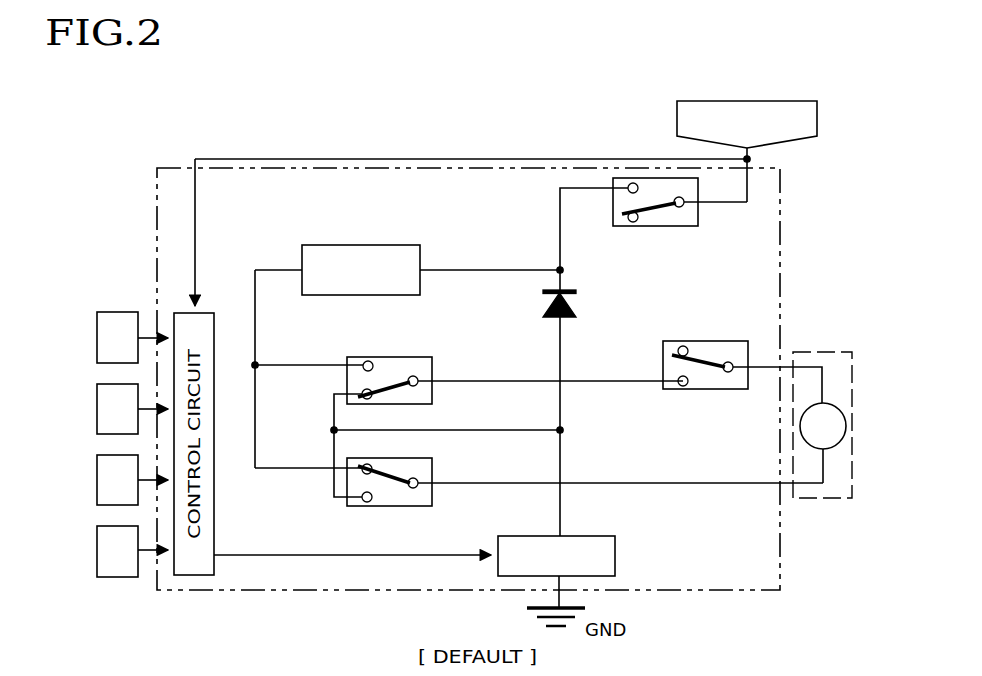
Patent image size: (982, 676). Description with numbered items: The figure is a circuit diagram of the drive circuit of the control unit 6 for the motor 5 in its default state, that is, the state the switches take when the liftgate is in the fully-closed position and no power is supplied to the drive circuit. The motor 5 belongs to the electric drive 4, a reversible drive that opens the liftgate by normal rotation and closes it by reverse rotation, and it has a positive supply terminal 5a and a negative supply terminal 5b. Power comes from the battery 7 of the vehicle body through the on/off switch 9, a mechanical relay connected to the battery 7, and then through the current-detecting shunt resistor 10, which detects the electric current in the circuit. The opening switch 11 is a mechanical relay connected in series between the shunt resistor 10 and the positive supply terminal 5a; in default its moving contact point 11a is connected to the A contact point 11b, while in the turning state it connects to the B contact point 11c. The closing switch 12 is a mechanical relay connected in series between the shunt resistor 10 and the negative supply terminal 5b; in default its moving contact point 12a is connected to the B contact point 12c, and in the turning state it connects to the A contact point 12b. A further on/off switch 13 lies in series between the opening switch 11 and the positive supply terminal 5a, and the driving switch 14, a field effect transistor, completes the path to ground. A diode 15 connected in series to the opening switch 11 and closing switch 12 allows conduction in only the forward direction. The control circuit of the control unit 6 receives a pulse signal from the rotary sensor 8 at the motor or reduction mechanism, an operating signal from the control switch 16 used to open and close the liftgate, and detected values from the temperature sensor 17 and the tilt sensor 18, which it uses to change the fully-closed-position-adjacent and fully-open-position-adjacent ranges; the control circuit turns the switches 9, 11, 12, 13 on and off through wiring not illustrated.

The electric drive 4 is at (808, 381).
The motor 5 is at (798, 405).
The positive supply terminal 5a is at (829, 385).
The negative supply terminal 5b is at (827, 470).
The control unit 6 is at (427, 168).
The battery 7 is at (817, 119).
The rotary sensor 8 is at (118, 312).
The on/off switch 9 is at (657, 228).
The current-detecting shunt resistor 10 is at (383, 295).
The opening switch 11 is at (469, 404).
The moving contact point 11a is at (414, 376).
The A contact point 11b is at (392, 397).
The B contact point 11c is at (368, 361).
The closing switch 12 is at (539, 500).
The moving contact point 12a is at (414, 489).
The A contact point 12b is at (368, 503).
The B contact point 12c is at (373, 468).
The on/off switch 13 is at (703, 391).
The driving switch 14 is at (616, 557).
The diode 15 is at (541, 301).
The control switch 16 is at (97, 398).
The temperature sensor 17 is at (97, 469).
The tilt sensor 18 is at (117, 578).